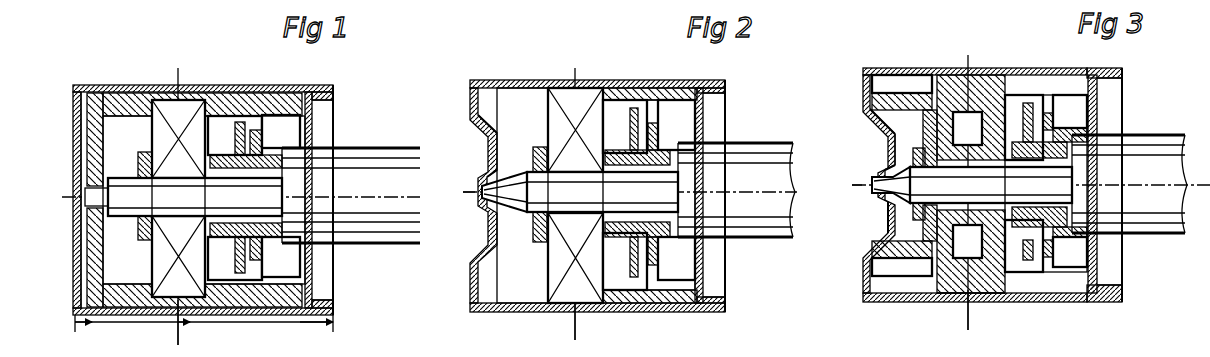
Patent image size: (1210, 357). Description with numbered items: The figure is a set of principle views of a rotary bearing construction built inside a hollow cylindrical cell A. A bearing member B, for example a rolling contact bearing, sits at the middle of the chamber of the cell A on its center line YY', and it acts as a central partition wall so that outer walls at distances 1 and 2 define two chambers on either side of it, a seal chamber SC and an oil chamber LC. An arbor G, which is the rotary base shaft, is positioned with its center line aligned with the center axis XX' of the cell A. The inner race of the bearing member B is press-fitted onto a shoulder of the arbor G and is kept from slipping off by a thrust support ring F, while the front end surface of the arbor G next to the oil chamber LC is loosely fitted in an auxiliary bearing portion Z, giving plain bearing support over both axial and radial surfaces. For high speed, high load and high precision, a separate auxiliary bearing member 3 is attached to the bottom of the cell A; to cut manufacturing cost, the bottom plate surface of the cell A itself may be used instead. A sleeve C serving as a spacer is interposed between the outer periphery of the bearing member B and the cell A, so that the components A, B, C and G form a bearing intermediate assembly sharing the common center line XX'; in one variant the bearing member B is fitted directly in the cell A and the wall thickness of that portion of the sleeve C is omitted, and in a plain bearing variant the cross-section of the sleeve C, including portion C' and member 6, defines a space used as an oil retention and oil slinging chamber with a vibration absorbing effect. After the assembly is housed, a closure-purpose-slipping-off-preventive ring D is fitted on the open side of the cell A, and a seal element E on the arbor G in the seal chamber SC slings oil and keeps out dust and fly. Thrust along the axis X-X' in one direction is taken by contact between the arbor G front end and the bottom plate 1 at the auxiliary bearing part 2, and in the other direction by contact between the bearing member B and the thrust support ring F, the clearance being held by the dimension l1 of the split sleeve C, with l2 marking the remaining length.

In FIG. 1, the bottom plate 1 is at (75, 110).
In FIG. 2, the bottom plate 1 is at (473, 232).
In FIG. 3, the bottom plate 1 is at (866, 181).
In FIG. 1, the auxiliary bearing part 2 is at (82, 143).
In FIG. 1, the auxiliary bearing member 3 is at (92, 173).
In FIG. 3, the sleeve member 6 is at (920, 137).
In FIG. 1, the hollow cylindrical cell A is at (117, 88).
In FIG. 2, the hollow cylindrical cell A is at (517, 80).
In FIG. 3, the hollow cylindrical cell A is at (992, 185).
In FIG. 1, the bearing member B is at (167, 107).
In FIG. 2, the bearing member B is at (590, 90).
In FIG. 3, the bearing member B is at (890, 238).
In FIG. 1, the sleeve C is at (202, 175).
In FIG. 2, the sleeve C is at (650, 173).
In FIG. 3, the sleeve C is at (986, 163).
In FIG. 3, the core portion C' is at (961, 309).
In FIG. 1, the closure-purpose-slipping-off-preventive ring D is at (308, 110).
In FIG. 2, the closure-purpose-slipping-off-preventive ring D is at (708, 112).
In FIG. 3, the closure-purpose-slipping-off-preventive ring D is at (1097, 260).
In FIG. 1, the seal element E is at (273, 145).
In FIG. 2, the seal element E is at (703, 245).
In FIG. 3, the seal element E is at (1097, 128).
In FIG. 1, the thrust support ring F is at (148, 242).
In FIG. 2, the thrust support ring F is at (538, 230).
In FIG. 3, the thrust support ring F is at (915, 212).
In FIG. 1, the arbor G is at (387, 153).
In FIG. 2, the arbor G is at (768, 145).
In FIG. 3, the arbor G is at (1170, 135).
In FIG. 1, the oil chamber LC is at (122, 248).
In FIG. 2, the oil chamber LC is at (513, 278).
In FIG. 3, the oil chamber LC is at (898, 122).
In FIG. 1, the seal chamber SC is at (288, 264).
In FIG. 2, the seal chamber SC is at (623, 277).
In FIG. 3, the seal chamber SC is at (1078, 258).
In FIG. 1, the center axis X is at (230, 200).
In FIG. 2, the center axis X is at (622, 194).
In FIG. 3, the center axis X is at (1031, 185).
In FIG. 2, the center axis X' is at (620, 194).
In FIG. 3, the center axis X' is at (838, 187).
In FIG. 1, the center line Y is at (177, 195).
In FIG. 2, the center line Y is at (573, 192).
In FIG. 3, the center line Y is at (966, 181).
In FIG. 1, the center line Y' is at (180, 324).
In FIG. 2, the center line Y' is at (577, 322).
In FIG. 3, the center line Y' is at (967, 312).
In FIG. 1, the auxiliary bearing portion Z is at (92, 218).
In FIG. 2, the auxiliary bearing portion Z is at (513, 180).
In FIG. 3, the auxiliary bearing portion Z is at (875, 165).
In FIG. 1, the dimension l1 is at (255, 324).
In FIG. 1, the length l2 is at (126, 324).